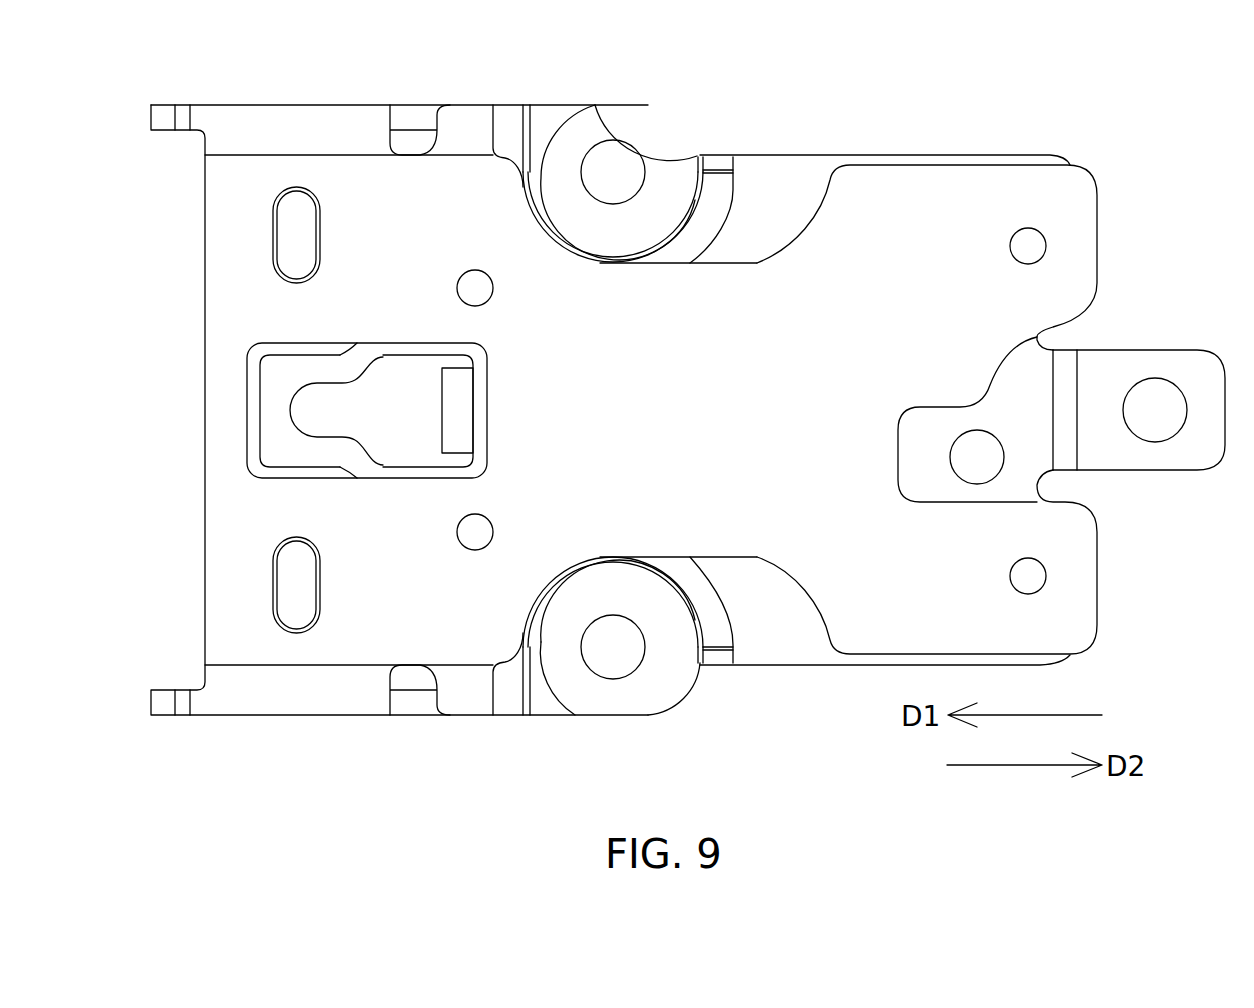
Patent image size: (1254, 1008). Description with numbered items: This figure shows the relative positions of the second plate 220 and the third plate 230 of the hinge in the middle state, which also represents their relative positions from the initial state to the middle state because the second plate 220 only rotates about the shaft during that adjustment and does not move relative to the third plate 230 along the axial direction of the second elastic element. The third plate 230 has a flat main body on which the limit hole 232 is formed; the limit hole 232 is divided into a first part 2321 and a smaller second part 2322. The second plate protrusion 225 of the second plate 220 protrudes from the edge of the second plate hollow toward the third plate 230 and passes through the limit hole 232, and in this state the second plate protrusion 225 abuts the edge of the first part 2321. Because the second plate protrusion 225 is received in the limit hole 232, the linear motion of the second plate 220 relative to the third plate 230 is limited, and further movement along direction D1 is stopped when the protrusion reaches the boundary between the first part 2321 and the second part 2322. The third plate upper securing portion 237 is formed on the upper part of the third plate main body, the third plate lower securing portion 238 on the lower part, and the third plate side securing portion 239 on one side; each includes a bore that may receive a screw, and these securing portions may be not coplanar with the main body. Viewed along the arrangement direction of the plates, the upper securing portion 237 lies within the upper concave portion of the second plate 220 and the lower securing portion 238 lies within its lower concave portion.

The second plate 220 is at (780, 185).
The second plate protrusion 225 is at (460, 412).
The third plate 230 is at (977, 195).
The limit hole 232 is at (297, 422).
The first part 2321 is at (425, 435).
The second part 2322 is at (315, 412).
The third plate upper securing portion 237 is at (670, 147).
The third plate lower securing portion 238 is at (668, 680).
The third plate side securing portion 239 is at (1203, 375).